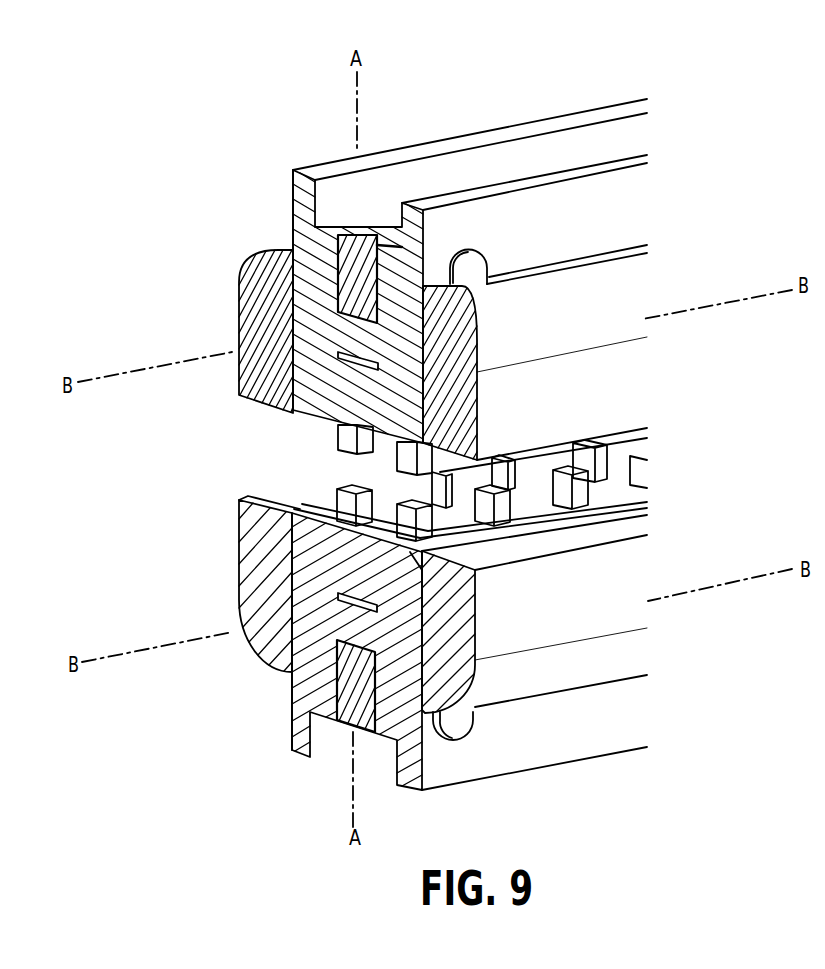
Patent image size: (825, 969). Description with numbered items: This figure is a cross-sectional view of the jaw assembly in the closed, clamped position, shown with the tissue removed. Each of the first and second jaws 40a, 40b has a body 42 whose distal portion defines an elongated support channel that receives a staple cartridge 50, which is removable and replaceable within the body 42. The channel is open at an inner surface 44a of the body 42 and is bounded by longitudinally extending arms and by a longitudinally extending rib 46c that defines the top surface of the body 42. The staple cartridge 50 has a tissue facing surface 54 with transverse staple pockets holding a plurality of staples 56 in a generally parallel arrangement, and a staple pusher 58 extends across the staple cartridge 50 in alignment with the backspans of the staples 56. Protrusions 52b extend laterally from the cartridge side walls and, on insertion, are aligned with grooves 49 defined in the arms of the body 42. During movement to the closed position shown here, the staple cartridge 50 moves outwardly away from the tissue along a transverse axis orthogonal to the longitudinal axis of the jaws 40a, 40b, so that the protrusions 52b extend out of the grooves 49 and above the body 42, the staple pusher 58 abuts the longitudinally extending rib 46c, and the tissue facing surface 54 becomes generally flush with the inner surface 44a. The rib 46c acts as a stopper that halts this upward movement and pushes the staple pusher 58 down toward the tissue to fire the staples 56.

The first jaw 40a is at (260, 303).
The second jaw 40b is at (258, 582).
The body 42 is at (250, 330).
The inner surface 44a is at (300, 506).
The longitudinally extending rib 46c is at (358, 257).
The grooves 49 is at (485, 280).
The staple cartridge 50 is at (317, 250).
The protrusions 52b is at (468, 265).
The tissue facing surface 54 is at (338, 428).
The staples 56 is at (340, 490).
The staple pusher 58 is at (257, 253).